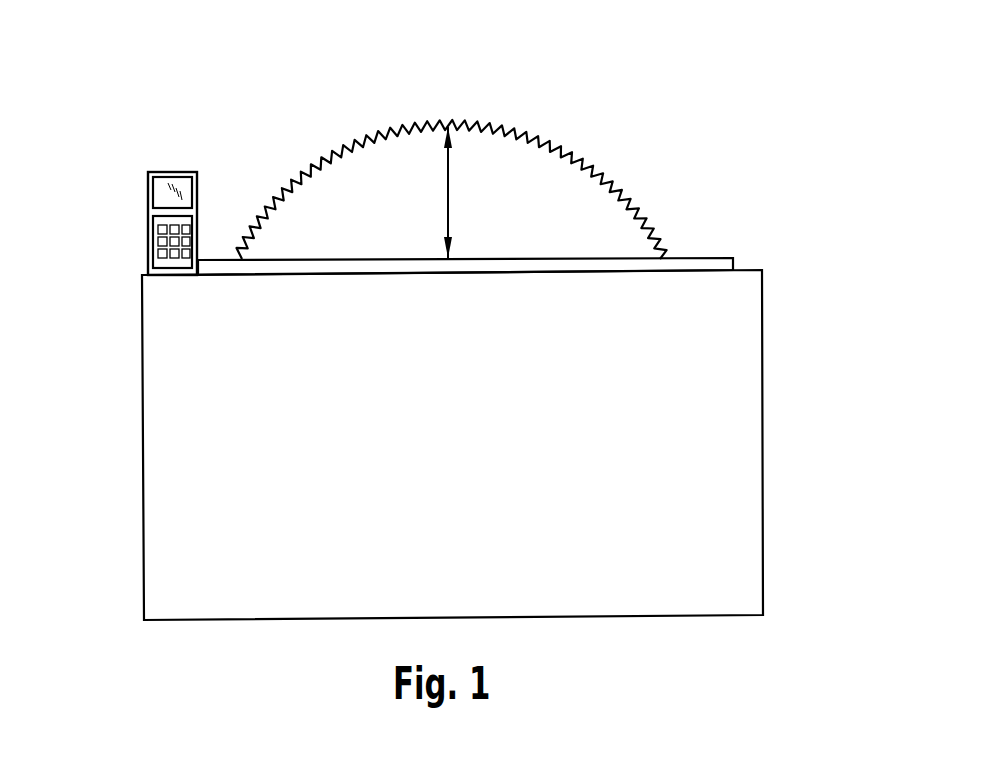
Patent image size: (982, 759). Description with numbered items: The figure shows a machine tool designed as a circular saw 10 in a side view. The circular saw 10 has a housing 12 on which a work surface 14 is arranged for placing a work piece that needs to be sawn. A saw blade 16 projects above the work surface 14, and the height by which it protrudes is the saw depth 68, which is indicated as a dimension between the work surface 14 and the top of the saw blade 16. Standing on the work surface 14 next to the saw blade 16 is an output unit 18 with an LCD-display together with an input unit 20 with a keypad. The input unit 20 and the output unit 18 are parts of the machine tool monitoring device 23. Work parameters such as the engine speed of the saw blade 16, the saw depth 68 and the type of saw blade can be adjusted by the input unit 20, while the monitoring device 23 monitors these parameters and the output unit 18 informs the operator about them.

The circular saw 10 is at (688, 80).
The housing 12 is at (740, 393).
The work surface 14 is at (699, 254).
The saw blade 16 is at (390, 170).
The output unit 18 is at (136, 184).
The input unit 20 is at (158, 248).
The machine tool monitoring device 23 is at (228, 189).
The saw depth 68 is at (450, 190).